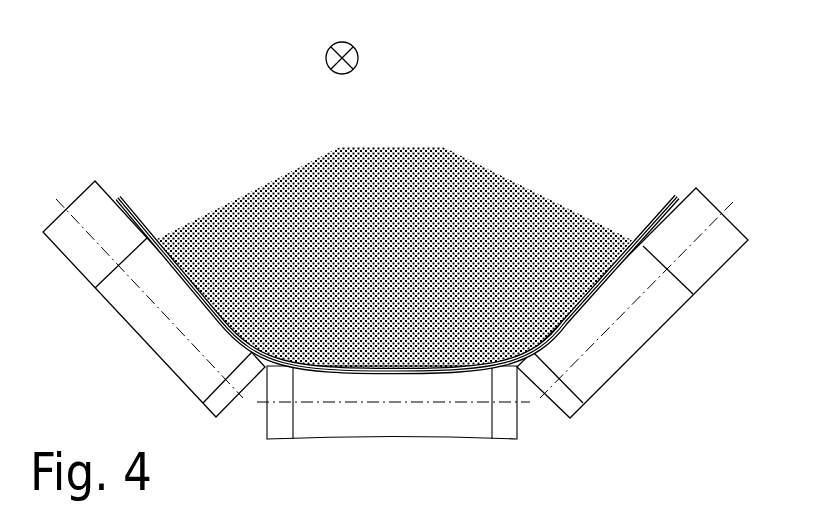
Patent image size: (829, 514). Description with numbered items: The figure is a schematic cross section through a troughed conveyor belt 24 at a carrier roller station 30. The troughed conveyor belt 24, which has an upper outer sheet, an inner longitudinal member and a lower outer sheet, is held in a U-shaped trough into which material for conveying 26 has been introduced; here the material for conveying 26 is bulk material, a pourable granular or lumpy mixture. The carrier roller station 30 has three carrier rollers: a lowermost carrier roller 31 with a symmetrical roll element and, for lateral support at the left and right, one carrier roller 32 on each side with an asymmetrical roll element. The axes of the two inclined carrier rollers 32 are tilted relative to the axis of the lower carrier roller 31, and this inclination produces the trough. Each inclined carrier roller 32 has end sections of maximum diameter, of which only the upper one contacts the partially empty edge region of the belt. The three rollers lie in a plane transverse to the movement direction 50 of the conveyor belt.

The carrier roller station 30 is at (236, 82).
The troughed conveyor belt 24 is at (677, 187).
The material for conveying 26 is at (419, 133).
The lowermost carrier roller 31 is at (380, 435).
The inclined carrier roller 32 is at (140, 334).
The movement direction 50 is at (322, 58).